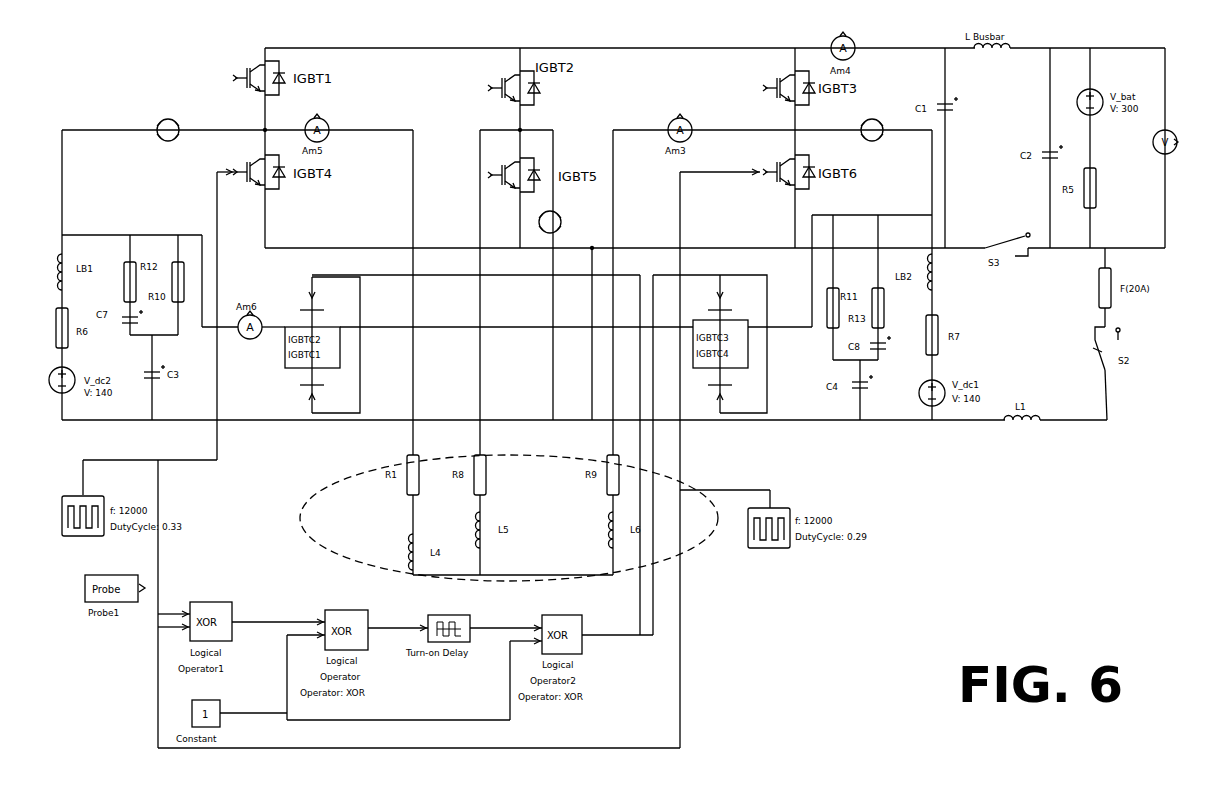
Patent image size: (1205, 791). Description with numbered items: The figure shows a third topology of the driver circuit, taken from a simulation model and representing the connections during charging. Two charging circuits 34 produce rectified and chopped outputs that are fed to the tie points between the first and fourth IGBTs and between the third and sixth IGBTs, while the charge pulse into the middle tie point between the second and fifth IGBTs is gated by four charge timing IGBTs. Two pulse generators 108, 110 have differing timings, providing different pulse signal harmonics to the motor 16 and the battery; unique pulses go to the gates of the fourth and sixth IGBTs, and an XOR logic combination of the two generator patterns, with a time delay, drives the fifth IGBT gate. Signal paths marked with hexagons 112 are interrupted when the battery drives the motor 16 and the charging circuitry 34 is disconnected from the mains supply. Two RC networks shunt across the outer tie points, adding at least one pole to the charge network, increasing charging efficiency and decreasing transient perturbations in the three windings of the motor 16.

The hexagons 112 is at (165, 118).
The charging circuitry 34 is at (74, 224).
The pulse generator 108 is at (70, 492).
The pulse generator 110 is at (776, 505).
The motor 16 is at (300, 466).